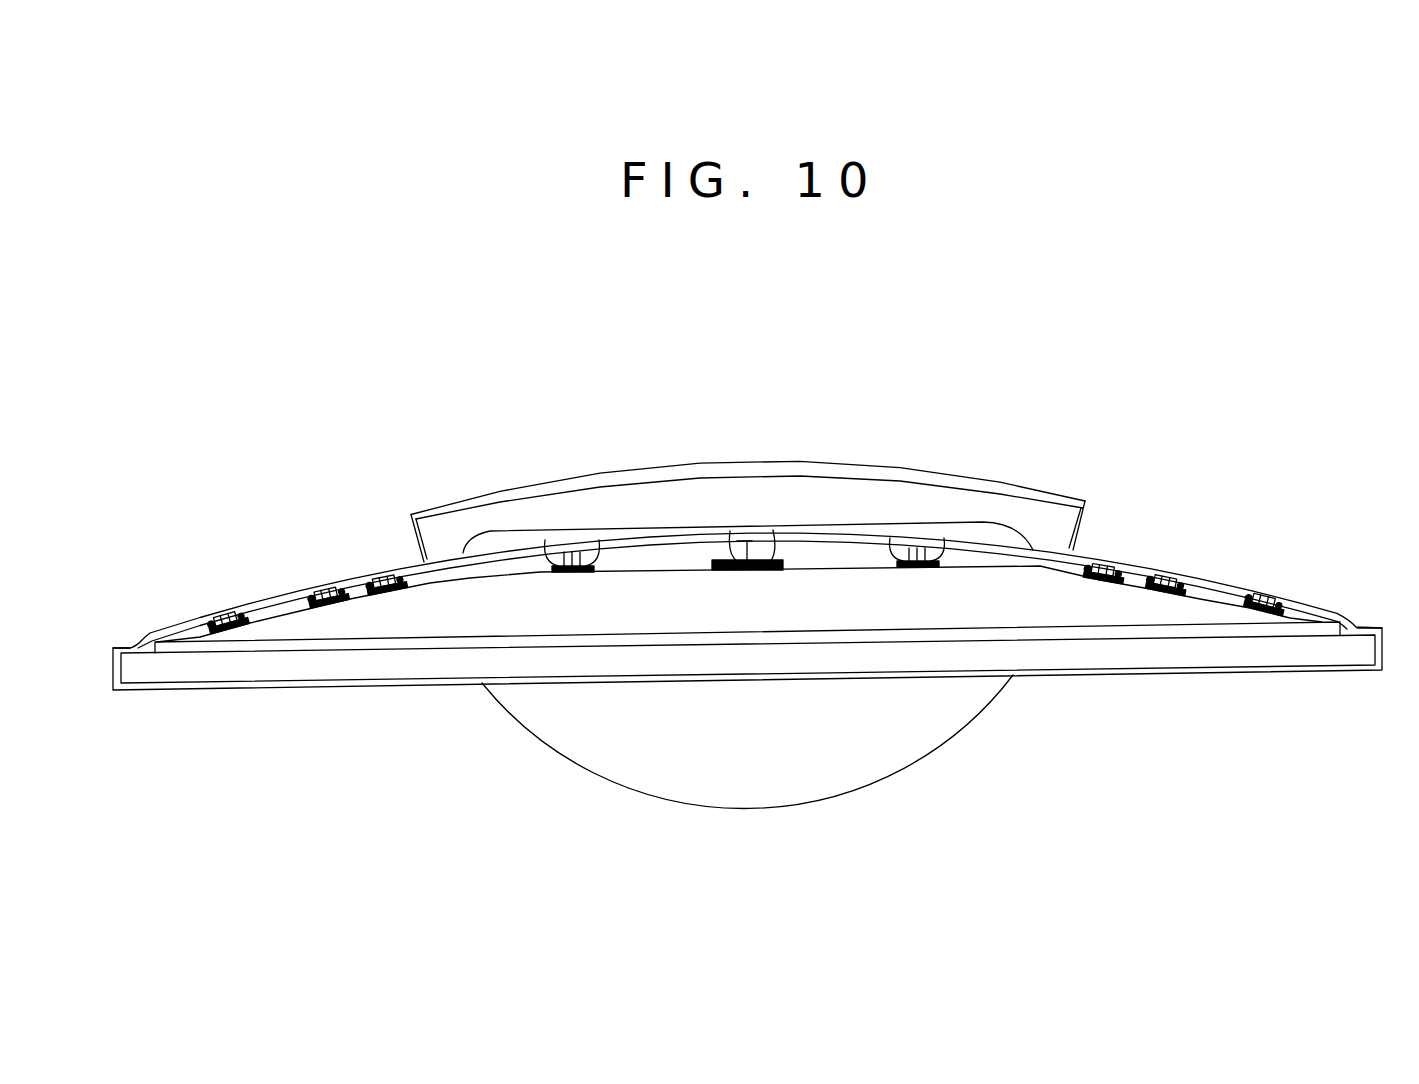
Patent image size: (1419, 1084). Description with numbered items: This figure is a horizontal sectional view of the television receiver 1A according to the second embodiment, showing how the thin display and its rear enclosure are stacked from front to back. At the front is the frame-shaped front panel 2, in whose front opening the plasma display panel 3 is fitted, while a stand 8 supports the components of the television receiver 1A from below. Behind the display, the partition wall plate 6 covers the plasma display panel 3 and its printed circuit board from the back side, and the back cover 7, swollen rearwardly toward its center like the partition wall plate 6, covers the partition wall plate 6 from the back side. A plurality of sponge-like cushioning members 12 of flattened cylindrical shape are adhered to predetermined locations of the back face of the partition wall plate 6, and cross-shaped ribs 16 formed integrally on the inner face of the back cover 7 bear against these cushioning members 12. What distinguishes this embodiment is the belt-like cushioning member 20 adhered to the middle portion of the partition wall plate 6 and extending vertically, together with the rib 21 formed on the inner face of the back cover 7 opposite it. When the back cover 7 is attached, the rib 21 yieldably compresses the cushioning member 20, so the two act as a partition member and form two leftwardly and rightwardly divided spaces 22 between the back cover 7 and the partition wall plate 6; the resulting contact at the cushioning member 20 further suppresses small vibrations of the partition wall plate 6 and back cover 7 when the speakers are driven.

The television receiver 1A is at (1027, 378).
The front panel 2 is at (1163, 675).
The plasma display panel 3 is at (386, 673).
The partition wall plate 6 is at (980, 583).
The back cover 7 is at (1048, 552).
The stand 8 is at (820, 790).
The cushioning members 12 is at (247, 608).
The cross-shaped ribs 16 is at (224, 608).
The cushioning member 20 is at (775, 558).
The rib 21 is at (734, 556).
The spaces 22 is at (642, 557).